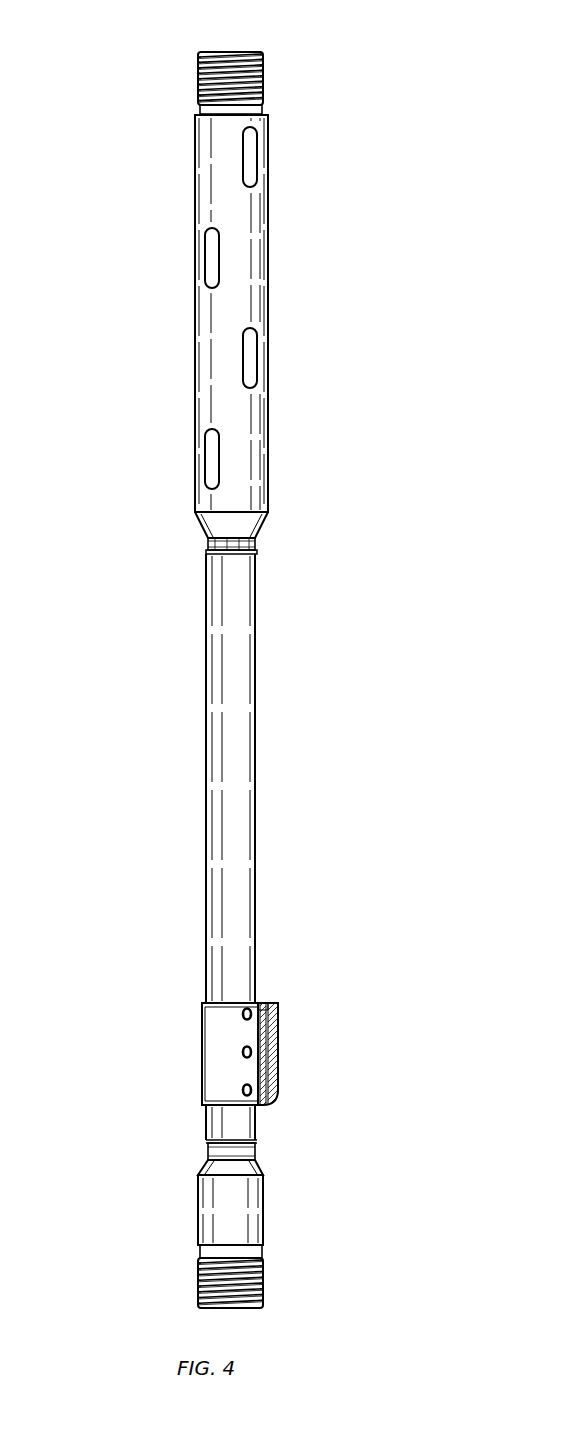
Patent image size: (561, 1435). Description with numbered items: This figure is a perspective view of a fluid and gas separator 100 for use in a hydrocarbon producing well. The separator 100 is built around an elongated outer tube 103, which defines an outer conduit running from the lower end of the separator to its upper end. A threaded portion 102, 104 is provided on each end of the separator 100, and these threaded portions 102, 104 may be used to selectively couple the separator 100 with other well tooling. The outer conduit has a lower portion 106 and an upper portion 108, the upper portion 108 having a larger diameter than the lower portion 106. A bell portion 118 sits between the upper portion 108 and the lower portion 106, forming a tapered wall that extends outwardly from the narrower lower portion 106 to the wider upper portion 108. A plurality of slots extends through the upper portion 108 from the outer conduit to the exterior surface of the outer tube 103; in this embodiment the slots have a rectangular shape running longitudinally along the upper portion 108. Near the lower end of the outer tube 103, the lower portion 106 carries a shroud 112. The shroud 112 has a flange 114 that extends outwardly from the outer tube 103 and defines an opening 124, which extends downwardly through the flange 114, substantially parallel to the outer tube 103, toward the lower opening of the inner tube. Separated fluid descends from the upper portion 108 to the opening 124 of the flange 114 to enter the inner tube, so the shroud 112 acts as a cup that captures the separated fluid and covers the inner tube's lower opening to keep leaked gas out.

The fluid and gas separator 100 is at (112, 19).
The threaded portion 102 is at (197, 77).
The outer tube 103 is at (190, 658).
The threaded portion 104 is at (198, 1282).
The lower portion 106 is at (206, 775).
The upper portion 108 is at (195, 357).
The shroud 112 is at (210, 1056).
The flange 114 is at (280, 1043).
The bell portion 118 is at (257, 532).
The opening 124 is at (272, 993).